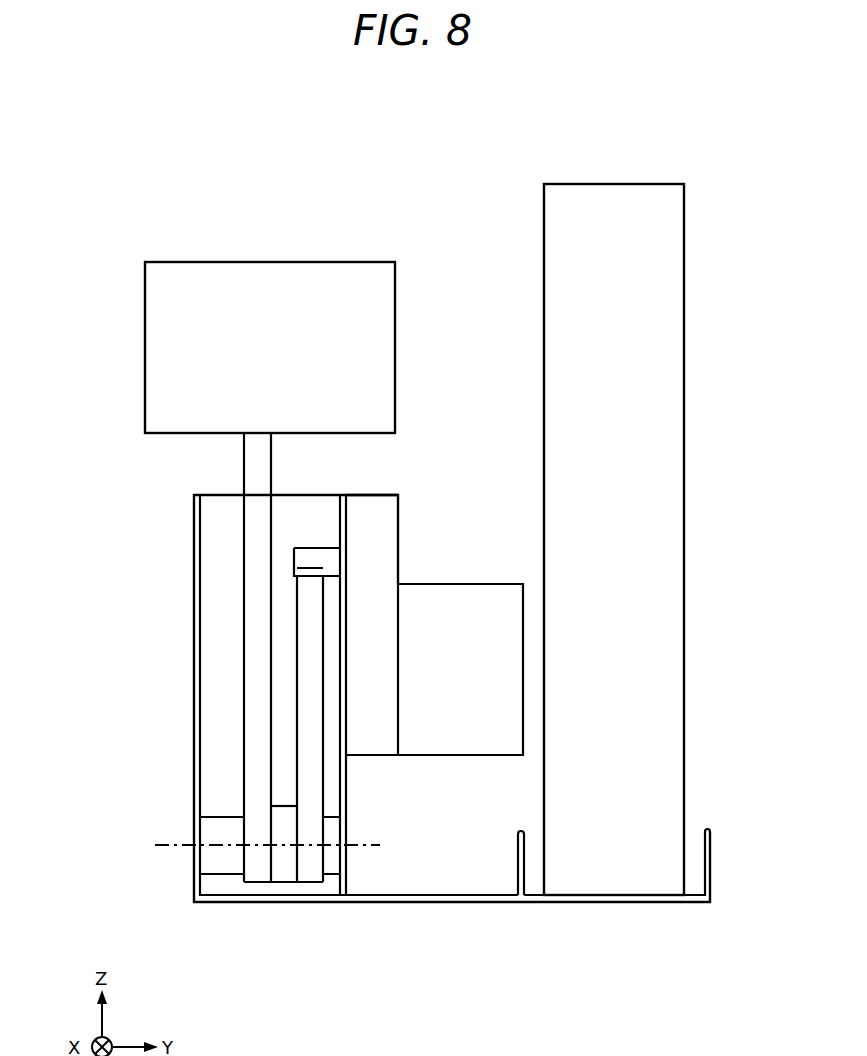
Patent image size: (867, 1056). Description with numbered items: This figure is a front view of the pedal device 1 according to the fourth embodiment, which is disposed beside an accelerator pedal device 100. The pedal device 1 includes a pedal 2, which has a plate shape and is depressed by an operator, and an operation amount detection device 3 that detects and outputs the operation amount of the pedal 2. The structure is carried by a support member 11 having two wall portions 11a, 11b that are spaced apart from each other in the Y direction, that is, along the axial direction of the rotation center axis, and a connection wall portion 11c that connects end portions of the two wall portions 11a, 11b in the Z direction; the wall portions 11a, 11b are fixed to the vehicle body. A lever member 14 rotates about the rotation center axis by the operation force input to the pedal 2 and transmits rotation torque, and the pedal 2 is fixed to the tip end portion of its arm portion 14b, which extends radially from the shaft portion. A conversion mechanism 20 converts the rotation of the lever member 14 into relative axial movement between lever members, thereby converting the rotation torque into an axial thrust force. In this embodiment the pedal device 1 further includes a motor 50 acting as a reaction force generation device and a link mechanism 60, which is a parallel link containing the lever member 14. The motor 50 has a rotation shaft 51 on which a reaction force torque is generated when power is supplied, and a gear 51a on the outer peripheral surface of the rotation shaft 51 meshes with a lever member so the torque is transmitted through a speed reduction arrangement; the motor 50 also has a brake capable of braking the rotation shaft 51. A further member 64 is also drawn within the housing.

The pedal device 1 is at (395, 192).
The pedal 2 is at (273, 282).
The operation amount detection device 3 is at (226, 881).
The support member 11 is at (393, 732).
The wall portion 11a is at (194, 743).
The wall portion 11b is at (347, 825).
The connection wall portion 11c is at (284, 904).
The lever member 14 is at (184, 657).
The arm portion 14b is at (253, 455).
The conversion mechanism 20 is at (244, 825).
The motor 50 is at (375, 495).
The rotation shaft 51 is at (219, 541).
The gear 51a is at (312, 548).
The link mechanism 60 is at (244, 600).
The guide rod 64 is at (297, 658).
The accelerator pedal device 100 is at (657, 357).